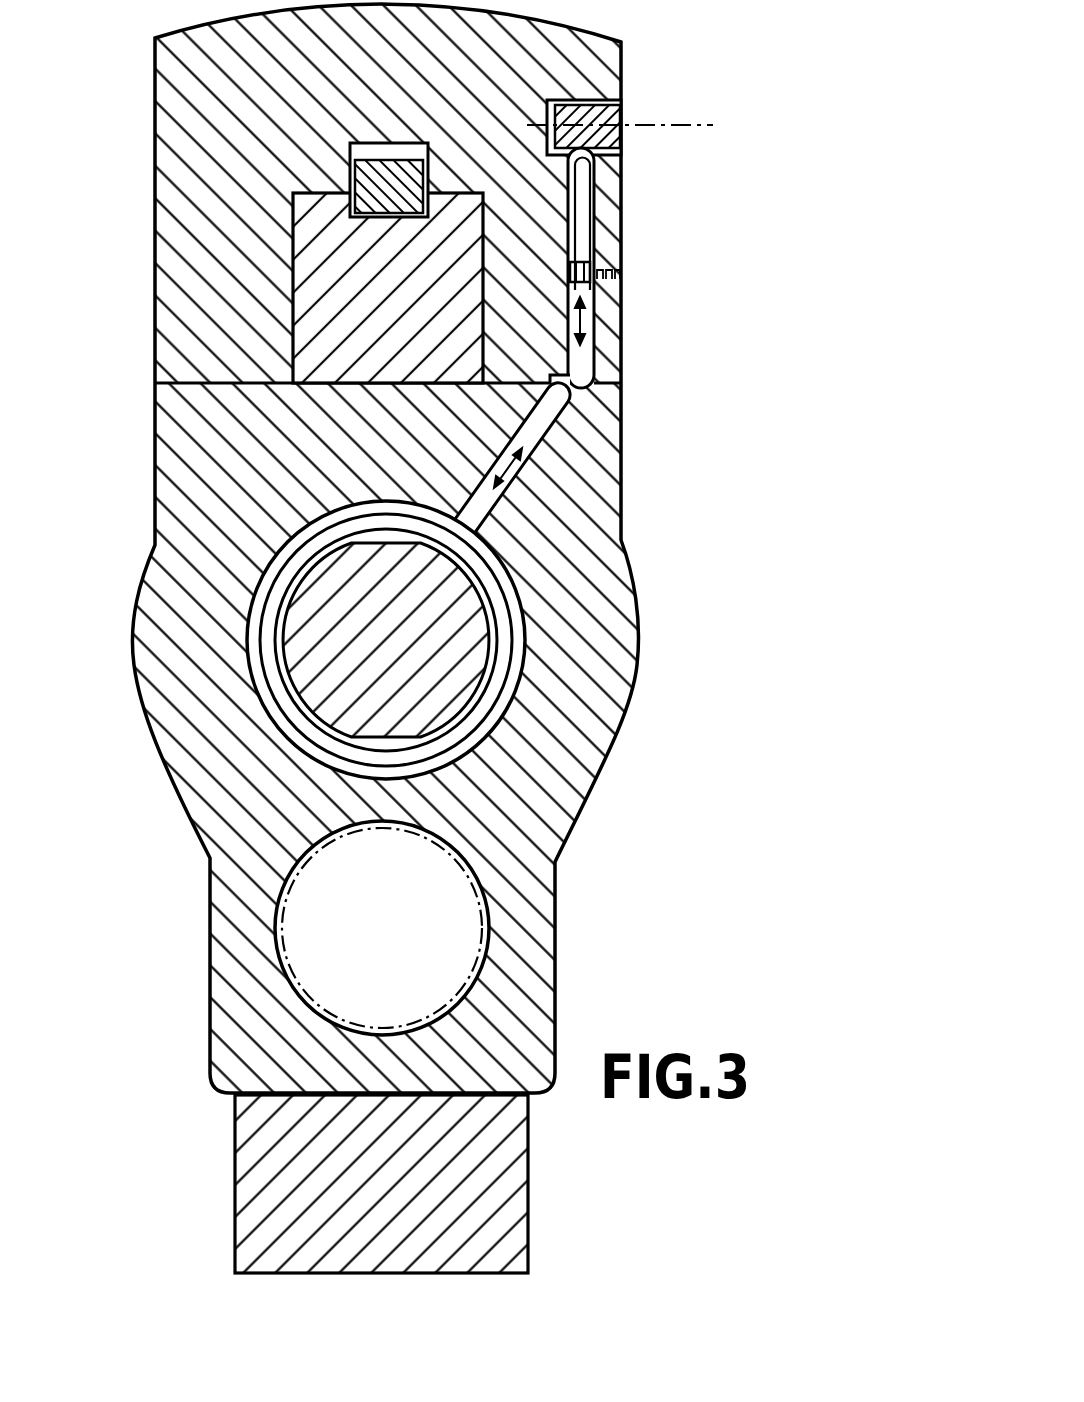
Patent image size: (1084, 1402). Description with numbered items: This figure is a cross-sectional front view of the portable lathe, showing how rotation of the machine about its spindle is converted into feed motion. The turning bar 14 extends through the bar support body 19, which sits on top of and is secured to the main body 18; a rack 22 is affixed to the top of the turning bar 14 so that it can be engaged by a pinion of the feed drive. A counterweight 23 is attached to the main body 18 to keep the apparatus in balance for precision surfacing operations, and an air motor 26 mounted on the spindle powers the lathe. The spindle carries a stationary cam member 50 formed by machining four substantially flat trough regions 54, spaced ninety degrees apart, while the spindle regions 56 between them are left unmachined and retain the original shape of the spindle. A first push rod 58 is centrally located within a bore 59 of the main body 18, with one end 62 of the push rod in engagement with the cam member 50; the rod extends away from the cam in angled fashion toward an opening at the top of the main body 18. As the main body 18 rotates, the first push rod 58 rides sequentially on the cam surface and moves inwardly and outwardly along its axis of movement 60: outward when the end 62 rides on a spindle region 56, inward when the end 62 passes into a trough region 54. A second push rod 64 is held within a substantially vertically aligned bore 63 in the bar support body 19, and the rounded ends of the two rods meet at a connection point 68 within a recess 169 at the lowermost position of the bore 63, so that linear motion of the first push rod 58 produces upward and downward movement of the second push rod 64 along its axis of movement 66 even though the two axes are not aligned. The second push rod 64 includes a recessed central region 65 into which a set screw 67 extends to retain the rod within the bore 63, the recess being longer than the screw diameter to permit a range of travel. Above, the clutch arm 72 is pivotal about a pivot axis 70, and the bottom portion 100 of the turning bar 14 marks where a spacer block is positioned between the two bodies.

The turning bar 14 is at (310, 263).
The main body 18 is at (175, 456).
The bar support body 19 is at (173, 133).
The rack 22 is at (387, 165).
The counterweight 23 is at (517, 1205).
The air motor 26 is at (450, 928).
The stationary cam member 50 is at (455, 708).
The trough region 54 is at (483, 655).
The spindle region 56 is at (483, 575).
The first push rod 58 is at (562, 590).
The bore 59 is at (560, 487).
The axis of movement 60 is at (552, 497).
The end 62 is at (452, 528).
The bore 63 is at (592, 215).
The second push rod 64 is at (582, 241).
The recessed central region 65 is at (570, 256).
The axis of movement 66 is at (581, 326).
The set screw 67 is at (621, 273).
The connection point 68 is at (580, 390).
The pivot axis 70 is at (693, 124).
The clutch arm 72 is at (616, 113).
The bottom portion 100 is at (339, 385).
The recess 169 is at (607, 384).